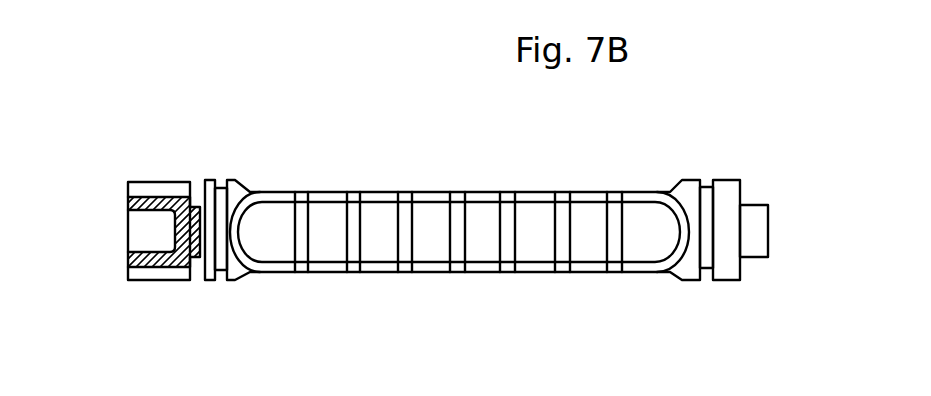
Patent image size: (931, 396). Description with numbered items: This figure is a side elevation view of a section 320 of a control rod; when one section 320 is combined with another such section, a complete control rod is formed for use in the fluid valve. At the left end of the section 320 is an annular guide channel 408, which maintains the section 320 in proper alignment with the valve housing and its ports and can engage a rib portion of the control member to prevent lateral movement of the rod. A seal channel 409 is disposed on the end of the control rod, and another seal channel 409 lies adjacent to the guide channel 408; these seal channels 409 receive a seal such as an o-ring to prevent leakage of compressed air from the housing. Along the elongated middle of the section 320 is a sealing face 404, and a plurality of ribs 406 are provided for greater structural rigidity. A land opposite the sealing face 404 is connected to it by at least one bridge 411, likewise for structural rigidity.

The section of a control rod 320 is at (665, 113).
The sealing face 404 is at (430, 210).
The ribs 406 is at (355, 272).
The annular guide channel 408 is at (198, 182).
The seal channel 409 is at (218, 188).
The bridge 411 is at (403, 250).